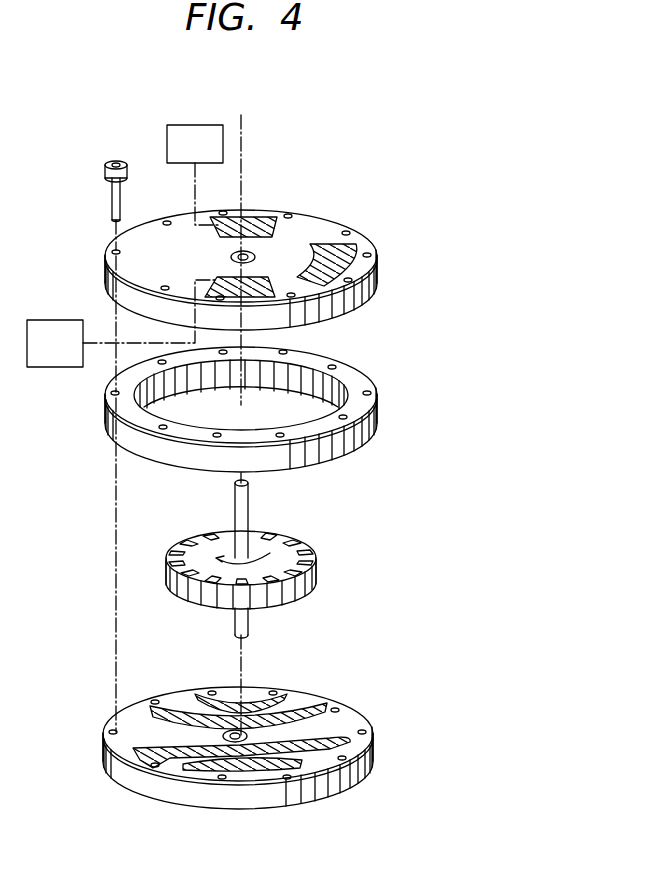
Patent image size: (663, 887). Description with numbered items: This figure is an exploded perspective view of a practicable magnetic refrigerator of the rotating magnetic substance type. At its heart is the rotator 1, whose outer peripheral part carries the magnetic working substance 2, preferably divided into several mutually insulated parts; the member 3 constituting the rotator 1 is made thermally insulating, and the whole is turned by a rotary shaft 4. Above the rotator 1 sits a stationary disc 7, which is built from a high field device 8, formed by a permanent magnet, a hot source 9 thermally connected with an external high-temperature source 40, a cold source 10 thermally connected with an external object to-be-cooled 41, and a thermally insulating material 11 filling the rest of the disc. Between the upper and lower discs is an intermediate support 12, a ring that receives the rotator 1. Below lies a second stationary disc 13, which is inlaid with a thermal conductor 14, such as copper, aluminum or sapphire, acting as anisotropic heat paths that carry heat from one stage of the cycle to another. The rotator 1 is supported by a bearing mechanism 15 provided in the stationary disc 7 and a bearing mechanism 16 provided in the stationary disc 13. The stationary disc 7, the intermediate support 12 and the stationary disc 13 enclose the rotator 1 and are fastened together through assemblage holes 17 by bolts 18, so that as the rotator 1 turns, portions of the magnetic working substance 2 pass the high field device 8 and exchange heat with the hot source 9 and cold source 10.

The rotator 1 is at (256, 557).
The magnetic working substance 2 is at (167, 548).
The member constituting the rotator 3 is at (300, 552).
The rotary shaft 4 is at (250, 498).
The stationary disc 7 is at (258, 258).
The high field device 8 is at (344, 250).
The hot source 9 is at (262, 216).
The cold source 10 is at (276, 300).
The thermally insulating material 11 is at (296, 238).
The intermediate support 12 is at (374, 424).
The stationary disc 13 is at (243, 729).
The thermal conductor 14 is at (303, 700).
The bearing mechanism 15 is at (231, 256).
The bearing mechanism 16 is at (222, 737).
The assemblage holes 17 is at (112, 250).
The bolts 18 is at (104, 171).
The external high-temperature source 40 is at (178, 125).
The external object to-be-cooled 41 is at (57, 368).